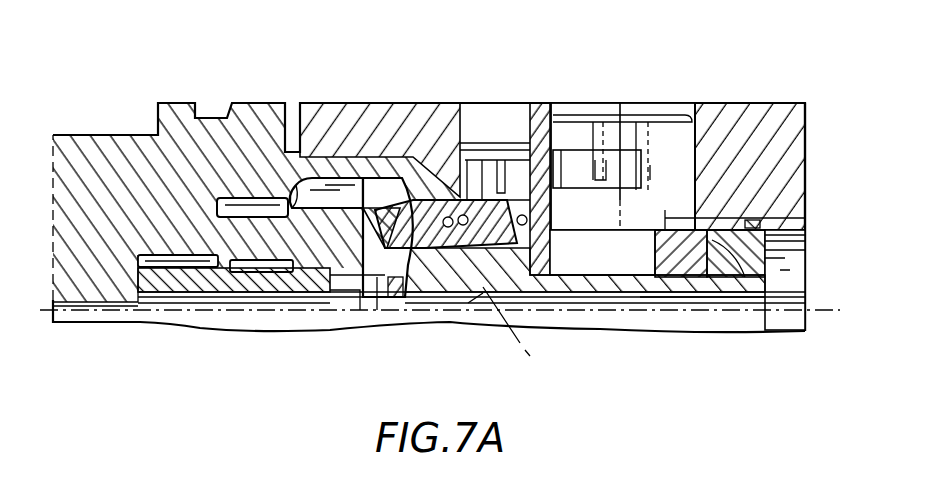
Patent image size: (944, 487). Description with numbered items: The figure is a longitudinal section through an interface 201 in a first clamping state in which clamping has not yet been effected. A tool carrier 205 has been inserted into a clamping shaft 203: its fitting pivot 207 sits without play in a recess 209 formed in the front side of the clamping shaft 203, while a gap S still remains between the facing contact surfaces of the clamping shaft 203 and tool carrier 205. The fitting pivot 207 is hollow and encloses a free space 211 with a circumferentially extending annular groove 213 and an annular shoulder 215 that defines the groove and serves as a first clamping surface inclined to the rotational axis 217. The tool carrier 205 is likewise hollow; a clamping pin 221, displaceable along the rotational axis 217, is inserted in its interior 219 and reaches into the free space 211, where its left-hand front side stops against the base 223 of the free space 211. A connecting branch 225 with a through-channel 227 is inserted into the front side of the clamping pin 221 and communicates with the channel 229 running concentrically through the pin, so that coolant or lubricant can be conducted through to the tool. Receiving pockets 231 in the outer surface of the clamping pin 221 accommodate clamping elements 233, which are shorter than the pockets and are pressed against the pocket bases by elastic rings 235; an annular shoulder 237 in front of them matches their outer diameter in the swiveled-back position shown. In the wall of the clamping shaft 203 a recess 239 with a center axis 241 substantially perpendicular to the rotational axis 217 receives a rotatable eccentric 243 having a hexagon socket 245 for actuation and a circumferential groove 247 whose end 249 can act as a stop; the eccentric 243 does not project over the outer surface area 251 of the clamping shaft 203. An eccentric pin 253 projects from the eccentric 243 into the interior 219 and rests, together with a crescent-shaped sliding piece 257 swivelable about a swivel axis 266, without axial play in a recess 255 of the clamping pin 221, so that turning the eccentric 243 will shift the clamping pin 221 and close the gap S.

The interface 201 is at (289, 78).
The clamping shaft 203 is at (124, 154).
The tool carrier 205 is at (808, 110).
The fitting pivot 207 is at (296, 193).
The recess 209 is at (360, 178).
The free space 211 is at (300, 190).
The annular groove 213 is at (363, 297).
The annular shoulder 215 is at (412, 253).
The rotational axis 217 is at (820, 305).
The interior 219 is at (792, 267).
The clamping pin 221 is at (717, 255).
The base of the free space 223 is at (217, 211).
The connecting branch 225 is at (170, 280).
The through-channel 227 is at (253, 297).
The channel 229 is at (682, 267).
The receiving pockets 231 is at (535, 237).
The clamping elements 233 is at (475, 210).
The elastic rings 235 is at (453, 197).
The annular shoulder 237 is at (318, 262).
The recess 239 is at (705, 140).
The center axis 241 is at (622, 100).
The eccentric 243 is at (682, 193).
The hexagon socket 245 is at (612, 135).
The groove 247 is at (571, 172).
The end of the groove 249 is at (610, 172).
The outer surface area 251 is at (768, 103).
The eccentric pin 253 is at (625, 288).
The recess 255 is at (740, 293).
The sliding piece 257 is at (680, 300).
The swivel axis 266 is at (665, 214).
The gap S is at (304, 98).